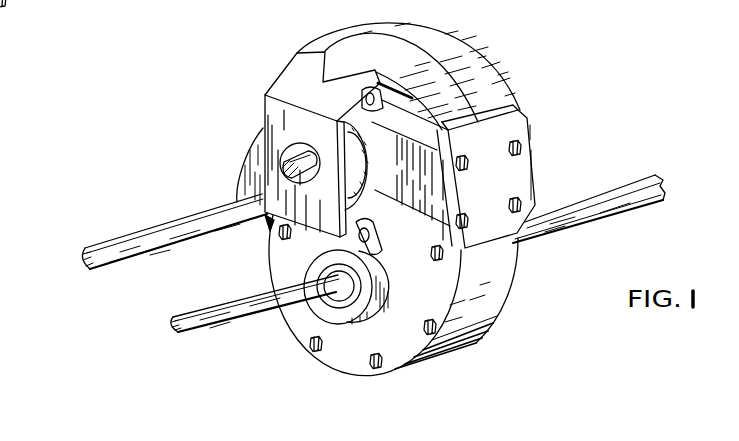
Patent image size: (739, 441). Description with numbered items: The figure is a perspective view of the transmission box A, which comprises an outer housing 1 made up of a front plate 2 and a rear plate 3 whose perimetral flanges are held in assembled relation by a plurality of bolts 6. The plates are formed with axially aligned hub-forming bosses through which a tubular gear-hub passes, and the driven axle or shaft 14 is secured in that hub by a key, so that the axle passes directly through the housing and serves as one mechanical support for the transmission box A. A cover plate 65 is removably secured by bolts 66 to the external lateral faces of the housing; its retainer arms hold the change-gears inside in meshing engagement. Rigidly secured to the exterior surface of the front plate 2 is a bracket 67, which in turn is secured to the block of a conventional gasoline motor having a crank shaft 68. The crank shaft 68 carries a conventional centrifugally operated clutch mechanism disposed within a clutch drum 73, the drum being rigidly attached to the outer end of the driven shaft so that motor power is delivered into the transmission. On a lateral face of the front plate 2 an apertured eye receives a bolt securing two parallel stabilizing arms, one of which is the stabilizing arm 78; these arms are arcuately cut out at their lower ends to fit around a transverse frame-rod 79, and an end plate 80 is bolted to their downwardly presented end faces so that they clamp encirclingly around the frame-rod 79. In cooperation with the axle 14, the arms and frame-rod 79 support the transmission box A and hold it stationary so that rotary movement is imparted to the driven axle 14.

The outer housing 1 is at (264, 263).
The front plate 2 is at (356, 42).
The rear plate 3 is at (480, 77).
The bolts 6 is at (287, 238).
The driven axle or shaft 14 is at (230, 330).
The cover plate 65 is at (535, 152).
The bolts 66 is at (465, 215).
The bracket 67 is at (262, 100).
The crank shaft 68 is at (290, 152).
The clutch drum 73 is at (343, 185).
The stabilizing arm 78 is at (246, 173).
The frame-rod 79 is at (166, 226).
The end plate 80 is at (260, 232).
The transmission box A is at (505, 333).